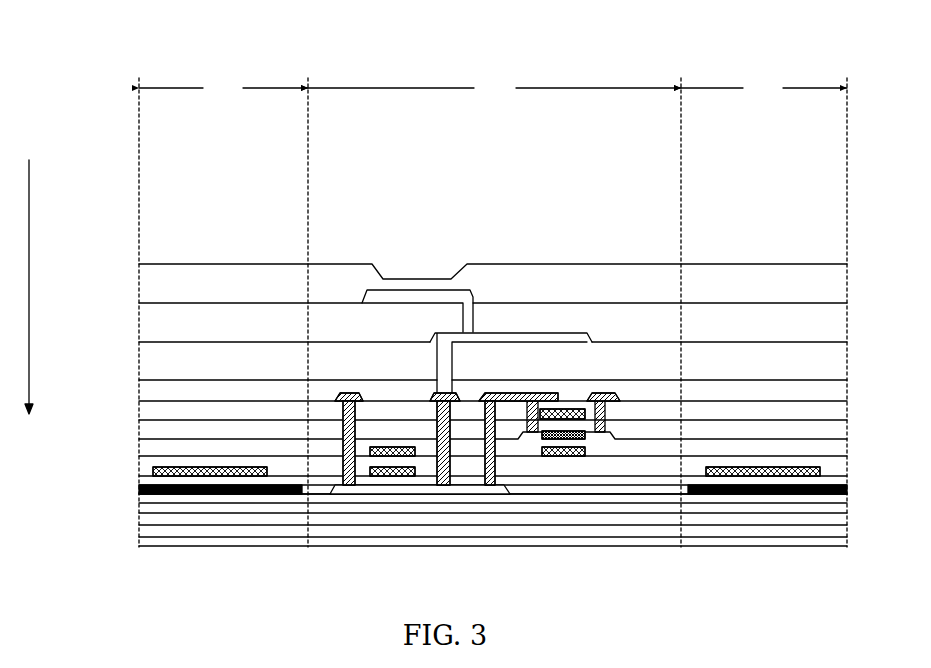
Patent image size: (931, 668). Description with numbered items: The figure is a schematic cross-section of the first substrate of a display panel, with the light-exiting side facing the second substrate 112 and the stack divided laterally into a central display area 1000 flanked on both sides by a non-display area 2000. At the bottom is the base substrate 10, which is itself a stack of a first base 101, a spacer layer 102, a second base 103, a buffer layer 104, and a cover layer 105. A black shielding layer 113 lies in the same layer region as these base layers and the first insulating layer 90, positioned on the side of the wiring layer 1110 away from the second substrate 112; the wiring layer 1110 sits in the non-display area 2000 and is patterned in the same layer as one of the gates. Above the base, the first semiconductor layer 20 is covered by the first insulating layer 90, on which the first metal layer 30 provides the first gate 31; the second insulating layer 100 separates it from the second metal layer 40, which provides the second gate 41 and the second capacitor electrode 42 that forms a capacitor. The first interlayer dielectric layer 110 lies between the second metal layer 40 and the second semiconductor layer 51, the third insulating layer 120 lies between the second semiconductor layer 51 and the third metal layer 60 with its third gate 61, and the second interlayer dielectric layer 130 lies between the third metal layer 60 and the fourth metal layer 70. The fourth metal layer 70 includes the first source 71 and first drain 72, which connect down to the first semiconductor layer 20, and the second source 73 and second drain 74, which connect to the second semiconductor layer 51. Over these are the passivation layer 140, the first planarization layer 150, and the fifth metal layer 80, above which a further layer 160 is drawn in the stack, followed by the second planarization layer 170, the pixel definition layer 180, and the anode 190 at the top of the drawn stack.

The second substrate 112 is at (65, 31).
The non-display area 2000 is at (493, 88).
The display area 1000 is at (494, 88).
The base substrate 10 is at (455, 520).
The first base 101 is at (469, 545).
The spacer layer 102 is at (151, 531).
The second base 103 is at (151, 519).
The buffer layer 104 is at (151, 509).
The cover layer 105 is at (151, 500).
The black shielding layer 113 is at (843, 493).
The first insulating layer 90 is at (842, 483).
The first semiconductor layer 20 is at (360, 492).
The wiring layer 1110 is at (162, 478).
The second insulating layer 100 is at (833, 466).
The first interlayer dielectric layer 110 is at (833, 448).
The third insulating layer 120 is at (833, 428).
The second interlayer dielectric layer 130 is at (833, 410).
The passivation layer 140 is at (833, 390).
The first planarization layer 150 is at (833, 366).
The seventh insulating layer 160 is at (833, 330).
The second planarization layer 170 is at (833, 285).
The pixel definition layer 180 is at (440, 300).
The anode 190 is at (400, 285).
The fifth metal layer 80 is at (503, 340).
The first metal layer 30 is at (395, 526).
The first gate 31 is at (410, 474).
The second metal layer 40 is at (559, 516).
The second gate 41 is at (563, 457).
The second capacitor electrode 42 is at (369, 451).
The second semiconductor layer 51 is at (588, 437).
The third metal layer 60 is at (598, 283).
The third gate 61 is at (568, 410).
The fourth metal layer 70 is at (215, 428).
The first source 71 is at (336, 395).
The first drain 72 is at (443, 486).
The second source 73 is at (521, 394).
The second drain 74 is at (613, 397).